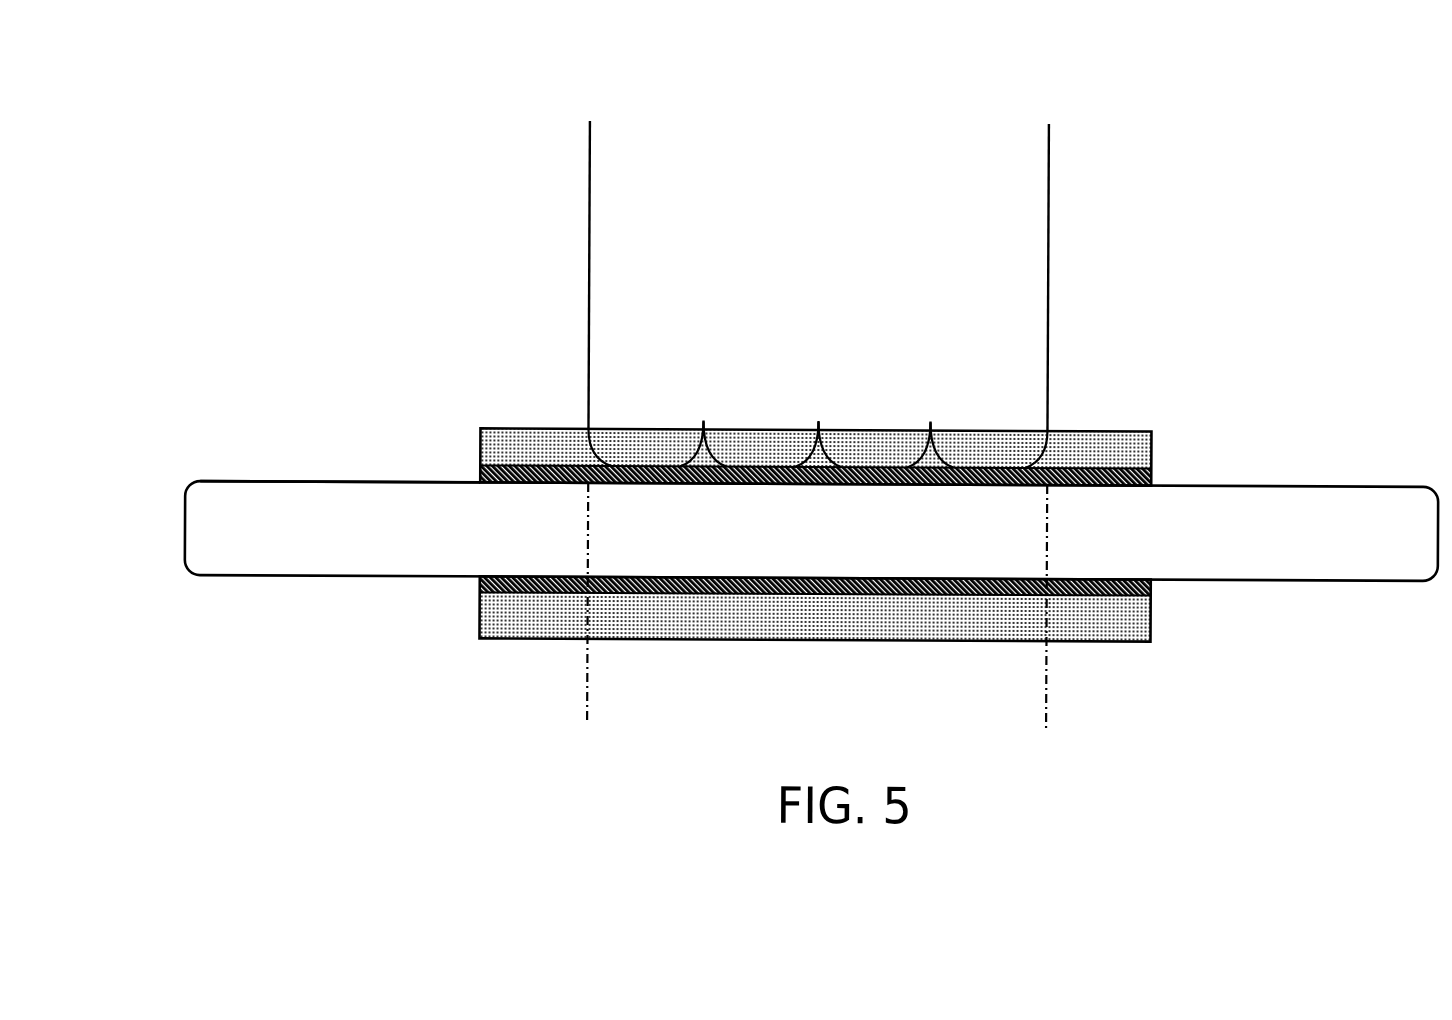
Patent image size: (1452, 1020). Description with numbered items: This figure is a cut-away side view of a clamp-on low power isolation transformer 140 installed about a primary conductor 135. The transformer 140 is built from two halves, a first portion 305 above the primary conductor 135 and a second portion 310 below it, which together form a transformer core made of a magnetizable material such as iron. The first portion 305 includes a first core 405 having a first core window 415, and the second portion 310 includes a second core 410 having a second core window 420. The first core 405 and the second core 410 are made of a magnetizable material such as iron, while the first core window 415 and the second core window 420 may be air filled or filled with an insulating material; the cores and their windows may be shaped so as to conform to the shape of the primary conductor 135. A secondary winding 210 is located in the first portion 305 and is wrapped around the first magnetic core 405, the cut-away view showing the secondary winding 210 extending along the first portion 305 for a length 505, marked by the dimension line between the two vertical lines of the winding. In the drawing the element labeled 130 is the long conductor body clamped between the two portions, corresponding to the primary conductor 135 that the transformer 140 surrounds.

The substrate 130 is at (170, 526).
The primary conductor 135 is at (323, 482).
The clamp-on isolation transformer 140 is at (860, 124).
The secondary winding 210 is at (1047, 233).
The first portion 305 is at (836, 425).
The second portion 310 is at (819, 646).
The first core 405 is at (1140, 452).
The second core 410 is at (1140, 627).
The first core window 415 is at (1088, 467).
The second core window 420 is at (1090, 595).
The length 505 is at (1045, 692).